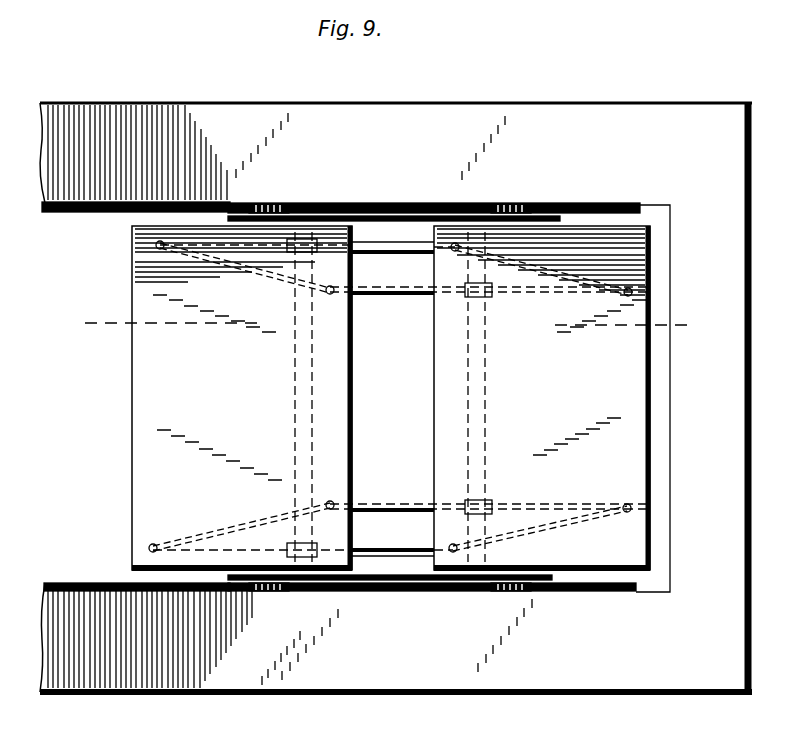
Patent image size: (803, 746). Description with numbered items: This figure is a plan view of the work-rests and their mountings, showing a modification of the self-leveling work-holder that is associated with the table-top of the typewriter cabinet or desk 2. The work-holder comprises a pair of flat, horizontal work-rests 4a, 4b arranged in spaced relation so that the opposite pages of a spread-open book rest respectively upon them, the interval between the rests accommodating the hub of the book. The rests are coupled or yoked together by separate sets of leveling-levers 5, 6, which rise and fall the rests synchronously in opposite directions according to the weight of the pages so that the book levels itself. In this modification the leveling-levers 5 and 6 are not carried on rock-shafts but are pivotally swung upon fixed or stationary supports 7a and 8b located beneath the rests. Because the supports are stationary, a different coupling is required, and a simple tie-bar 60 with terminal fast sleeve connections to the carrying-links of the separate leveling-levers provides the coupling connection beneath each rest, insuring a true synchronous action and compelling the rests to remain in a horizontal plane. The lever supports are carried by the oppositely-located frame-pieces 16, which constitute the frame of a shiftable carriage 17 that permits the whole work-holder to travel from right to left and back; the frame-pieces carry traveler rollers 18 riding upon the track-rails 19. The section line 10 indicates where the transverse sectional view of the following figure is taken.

The typewriter cabinet or desk 2 is at (396, 397).
The work-rest 4a is at (242, 398).
The work-rest 4b is at (542, 398).
The leveling-lever 5 is at (390, 254).
The leveling-lever 6 is at (392, 296).
The fixed support 7a is at (312, 392).
The fixed support 8b is at (470, 457).
The section line 10 is at (386, 325).
The frame-piece 16 is at (375, 213).
The shiftable carriage 17 is at (393, 389).
The traveler roller 18 is at (270, 204).
The track-rail 19 is at (118, 212).
The tie-bar 60 is at (265, 278).